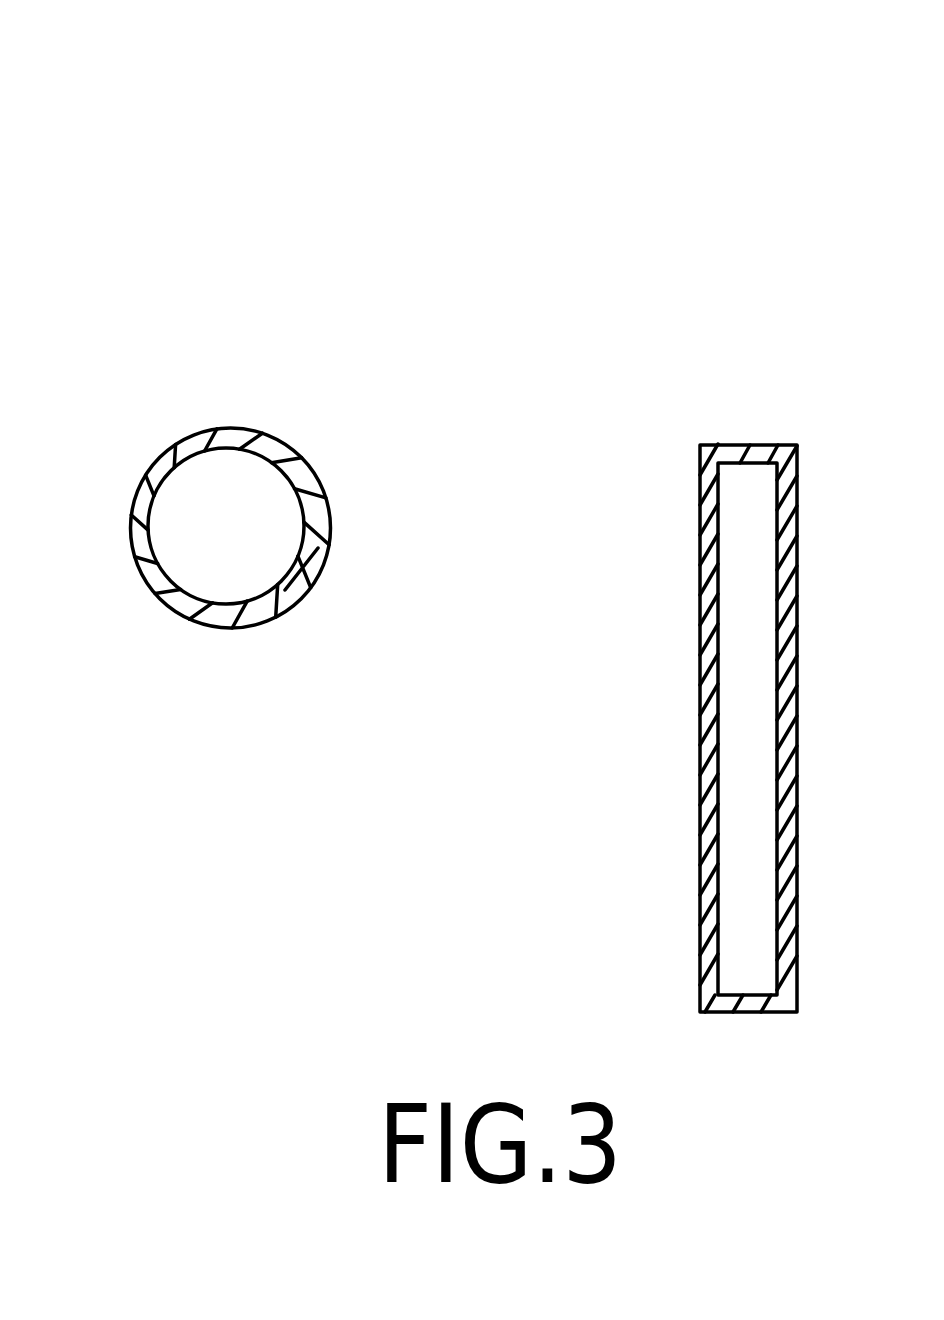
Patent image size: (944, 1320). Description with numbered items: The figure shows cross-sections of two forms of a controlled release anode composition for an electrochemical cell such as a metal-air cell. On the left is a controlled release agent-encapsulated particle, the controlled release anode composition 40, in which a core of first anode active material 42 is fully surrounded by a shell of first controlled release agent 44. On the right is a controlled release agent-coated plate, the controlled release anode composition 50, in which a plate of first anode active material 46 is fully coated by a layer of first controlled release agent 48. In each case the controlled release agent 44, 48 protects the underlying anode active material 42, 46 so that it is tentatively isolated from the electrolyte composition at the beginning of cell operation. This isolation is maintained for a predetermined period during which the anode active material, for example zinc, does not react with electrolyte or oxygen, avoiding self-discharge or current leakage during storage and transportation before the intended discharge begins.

The controlled release anode composition 40 is at (203, 403).
The first anode active material 42 is at (215, 552).
The first controlled release agent 44 is at (248, 452).
The first anode active material 46 is at (735, 698).
The first controlled release agent 48 is at (727, 450).
The controlled release anode composition 50 is at (697, 509).